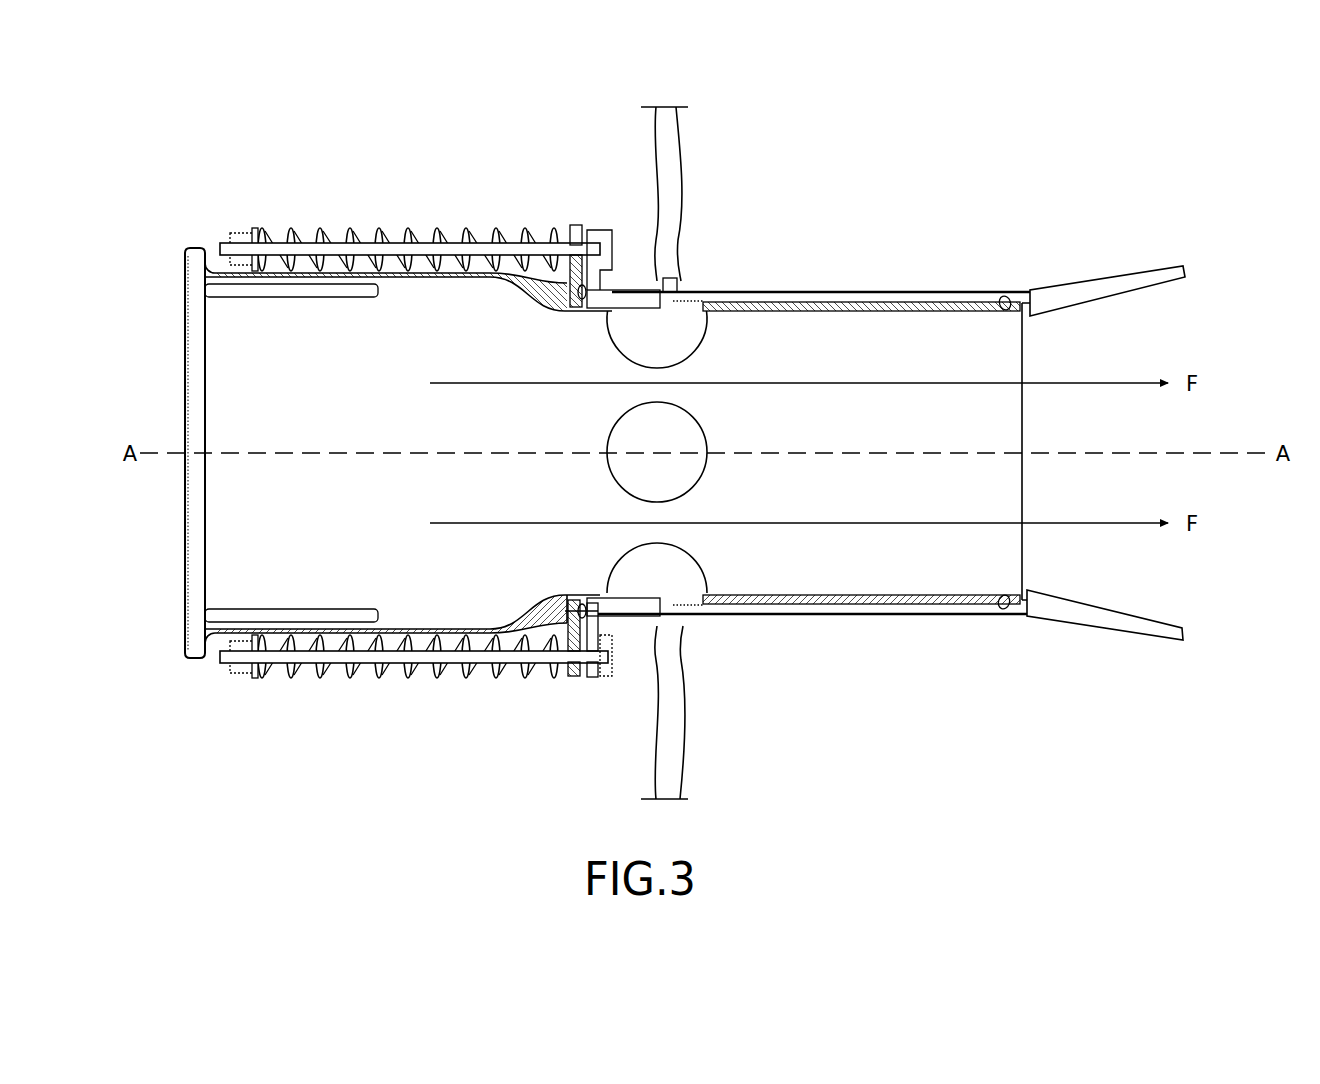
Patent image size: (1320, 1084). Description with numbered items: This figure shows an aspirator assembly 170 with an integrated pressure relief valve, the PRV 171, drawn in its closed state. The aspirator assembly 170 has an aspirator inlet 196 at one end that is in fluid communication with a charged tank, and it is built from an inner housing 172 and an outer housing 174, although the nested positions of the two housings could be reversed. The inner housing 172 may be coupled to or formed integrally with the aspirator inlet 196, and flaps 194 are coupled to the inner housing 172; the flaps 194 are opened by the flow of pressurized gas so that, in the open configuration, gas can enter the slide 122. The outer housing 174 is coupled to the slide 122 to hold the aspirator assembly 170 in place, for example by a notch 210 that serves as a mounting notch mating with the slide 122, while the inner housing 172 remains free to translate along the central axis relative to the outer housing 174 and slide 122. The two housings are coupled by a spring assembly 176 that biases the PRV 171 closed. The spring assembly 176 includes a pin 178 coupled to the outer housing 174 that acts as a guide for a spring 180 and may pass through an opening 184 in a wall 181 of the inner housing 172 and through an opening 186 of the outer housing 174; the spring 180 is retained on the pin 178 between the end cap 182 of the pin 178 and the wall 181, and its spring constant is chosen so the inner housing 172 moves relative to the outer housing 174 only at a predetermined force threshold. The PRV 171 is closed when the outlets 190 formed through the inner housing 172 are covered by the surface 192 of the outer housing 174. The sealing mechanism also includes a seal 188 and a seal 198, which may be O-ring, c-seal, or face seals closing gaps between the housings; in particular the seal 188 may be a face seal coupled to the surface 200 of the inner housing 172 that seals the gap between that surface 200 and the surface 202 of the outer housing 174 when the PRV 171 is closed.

The aspirator assembly 170 is at (276, 179).
The slide 122 is at (672, 190).
The PRV 171 is at (646, 319).
The inner housing 172 is at (573, 224).
The outer housing 174 is at (598, 228).
The spring assembly 176 is at (414, 689).
The pin 178 is at (597, 677).
The spring 180 is at (295, 676).
The wall 181 is at (572, 676).
The end cap 182 is at (255, 677).
The opening 184 is at (568, 647).
The opening 186 is at (607, 645).
The seal 188 is at (578, 606).
The outlets 190 is at (703, 477).
The surface 192 is at (648, 306).
The flaps 194 is at (270, 298).
The aspirator inlet 196 is at (187, 384).
The seal 198 is at (1007, 610).
The surface 200 is at (574, 630).
The surface 202 is at (583, 606).
The notch 210 is at (680, 280).